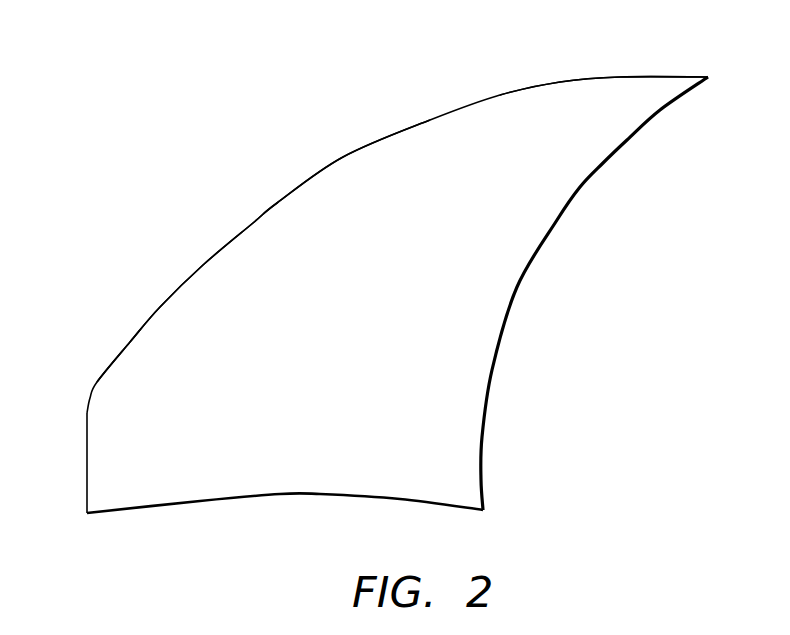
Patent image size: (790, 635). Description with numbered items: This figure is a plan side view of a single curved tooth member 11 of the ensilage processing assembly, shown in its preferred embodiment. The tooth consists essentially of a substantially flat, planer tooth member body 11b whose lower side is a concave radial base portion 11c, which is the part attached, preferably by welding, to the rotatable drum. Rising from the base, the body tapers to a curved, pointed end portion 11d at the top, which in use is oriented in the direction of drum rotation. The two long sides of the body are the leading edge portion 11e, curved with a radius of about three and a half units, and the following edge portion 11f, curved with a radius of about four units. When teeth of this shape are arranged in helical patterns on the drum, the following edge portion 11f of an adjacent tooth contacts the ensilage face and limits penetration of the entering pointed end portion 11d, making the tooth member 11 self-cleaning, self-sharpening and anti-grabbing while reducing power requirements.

The curved tooth member 11 is at (392, 298).
The planer tooth member body 11b is at (370, 325).
The concave radial base portion 11c is at (303, 498).
The curved, pointed end portion 11d is at (620, 97).
The leading edge portion 11e is at (517, 290).
The following edge portion 11f is at (273, 207).